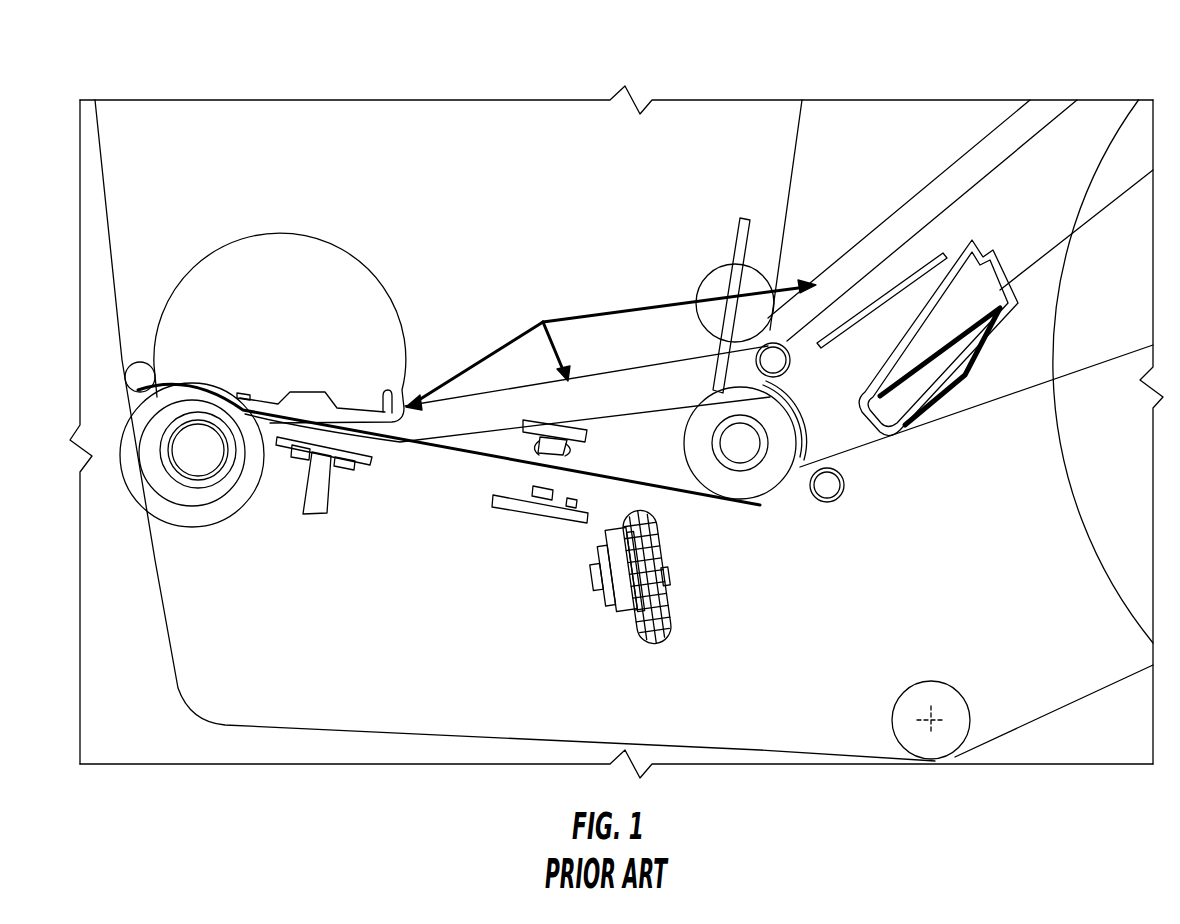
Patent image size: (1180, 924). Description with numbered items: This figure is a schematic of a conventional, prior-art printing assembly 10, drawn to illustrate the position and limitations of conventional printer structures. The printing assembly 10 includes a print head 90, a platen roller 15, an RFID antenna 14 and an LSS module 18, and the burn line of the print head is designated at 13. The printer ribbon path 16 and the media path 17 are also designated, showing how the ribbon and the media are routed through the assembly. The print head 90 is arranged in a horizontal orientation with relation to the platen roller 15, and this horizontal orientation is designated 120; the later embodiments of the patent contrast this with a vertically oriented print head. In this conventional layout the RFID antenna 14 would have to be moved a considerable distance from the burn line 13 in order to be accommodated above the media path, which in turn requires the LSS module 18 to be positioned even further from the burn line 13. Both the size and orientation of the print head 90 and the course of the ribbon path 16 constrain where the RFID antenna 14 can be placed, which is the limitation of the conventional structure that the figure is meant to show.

The printing assembly 10 is at (632, 70).
The burn line 13 is at (228, 385).
The RFID antenna 14 is at (360, 473).
The platen roller 15 is at (166, 485).
The printer ribbon path 16 is at (600, 305).
The media path 17 is at (715, 500).
The LSS module 18 is at (488, 505).
The print head 90 is at (303, 390).
The horizontal orientation 120 is at (120, 480).